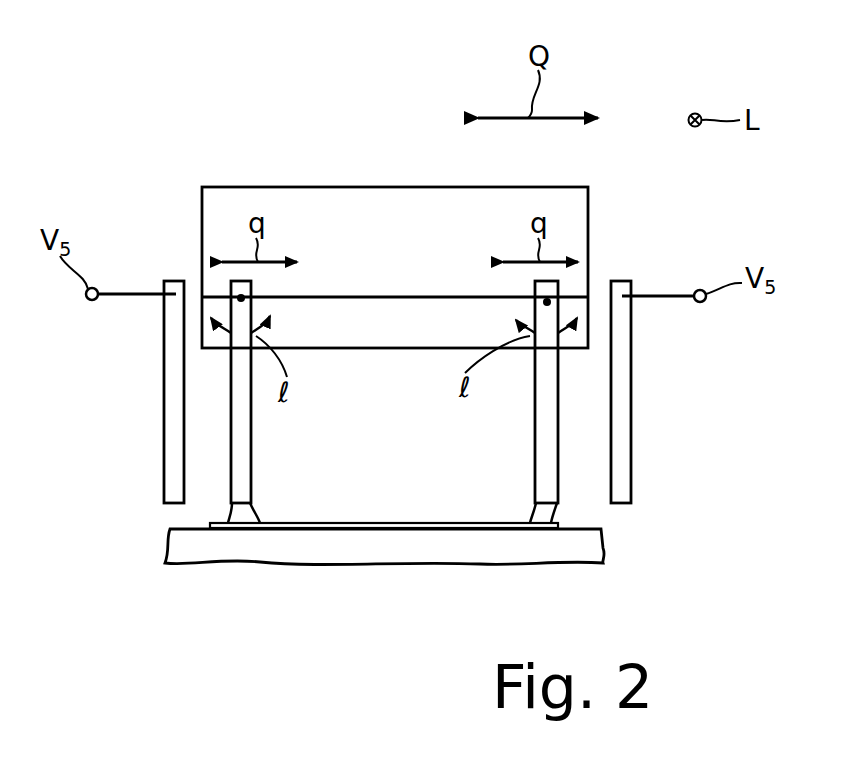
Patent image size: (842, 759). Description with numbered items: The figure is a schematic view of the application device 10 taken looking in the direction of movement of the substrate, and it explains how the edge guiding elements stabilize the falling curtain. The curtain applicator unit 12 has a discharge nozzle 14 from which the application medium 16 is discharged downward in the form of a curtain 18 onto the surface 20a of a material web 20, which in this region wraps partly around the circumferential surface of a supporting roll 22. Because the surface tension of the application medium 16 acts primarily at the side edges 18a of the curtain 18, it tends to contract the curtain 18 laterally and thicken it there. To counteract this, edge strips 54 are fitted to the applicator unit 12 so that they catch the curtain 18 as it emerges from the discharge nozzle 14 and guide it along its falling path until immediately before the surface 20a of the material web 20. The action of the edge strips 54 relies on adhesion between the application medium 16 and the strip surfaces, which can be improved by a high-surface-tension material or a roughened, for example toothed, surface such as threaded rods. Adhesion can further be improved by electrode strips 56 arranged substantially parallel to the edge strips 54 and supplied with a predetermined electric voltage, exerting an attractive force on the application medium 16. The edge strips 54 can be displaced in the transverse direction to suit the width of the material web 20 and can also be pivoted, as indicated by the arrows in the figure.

The application device 10 is at (102, 88).
The curtain applicator unit 12 is at (236, 187).
The discharge nozzle 14 is at (579, 345).
The application medium 16 is at (502, 398).
The curtain 18 is at (402, 446).
The side edges of the curtain 18a is at (265, 435).
The material web 20 is at (556, 522).
The surface of the material web 20a is at (294, 508).
The supporting roll 22 is at (603, 560).
The edge strips 54 is at (234, 506).
The electrode strips 56 is at (164, 389).